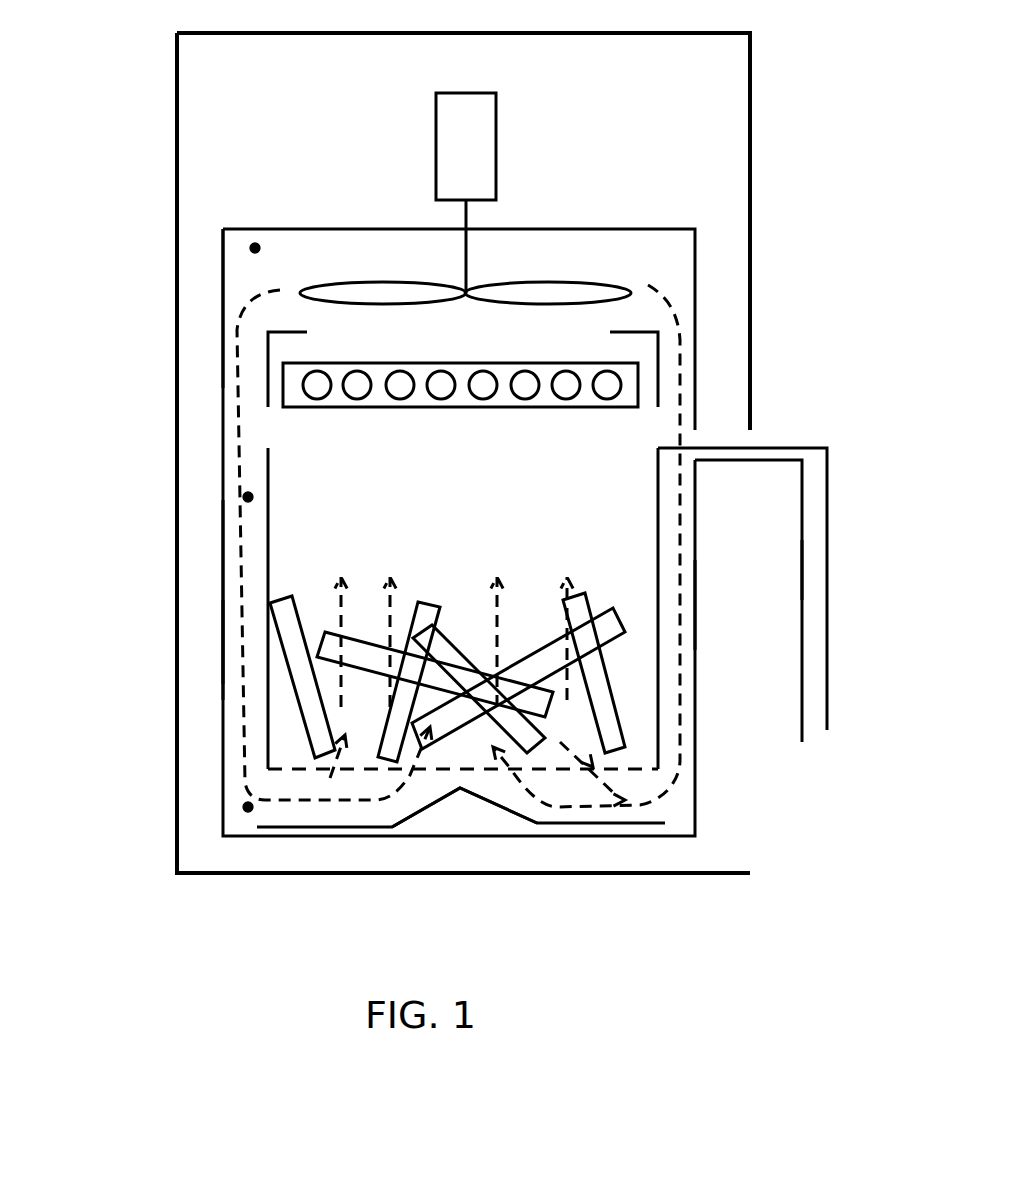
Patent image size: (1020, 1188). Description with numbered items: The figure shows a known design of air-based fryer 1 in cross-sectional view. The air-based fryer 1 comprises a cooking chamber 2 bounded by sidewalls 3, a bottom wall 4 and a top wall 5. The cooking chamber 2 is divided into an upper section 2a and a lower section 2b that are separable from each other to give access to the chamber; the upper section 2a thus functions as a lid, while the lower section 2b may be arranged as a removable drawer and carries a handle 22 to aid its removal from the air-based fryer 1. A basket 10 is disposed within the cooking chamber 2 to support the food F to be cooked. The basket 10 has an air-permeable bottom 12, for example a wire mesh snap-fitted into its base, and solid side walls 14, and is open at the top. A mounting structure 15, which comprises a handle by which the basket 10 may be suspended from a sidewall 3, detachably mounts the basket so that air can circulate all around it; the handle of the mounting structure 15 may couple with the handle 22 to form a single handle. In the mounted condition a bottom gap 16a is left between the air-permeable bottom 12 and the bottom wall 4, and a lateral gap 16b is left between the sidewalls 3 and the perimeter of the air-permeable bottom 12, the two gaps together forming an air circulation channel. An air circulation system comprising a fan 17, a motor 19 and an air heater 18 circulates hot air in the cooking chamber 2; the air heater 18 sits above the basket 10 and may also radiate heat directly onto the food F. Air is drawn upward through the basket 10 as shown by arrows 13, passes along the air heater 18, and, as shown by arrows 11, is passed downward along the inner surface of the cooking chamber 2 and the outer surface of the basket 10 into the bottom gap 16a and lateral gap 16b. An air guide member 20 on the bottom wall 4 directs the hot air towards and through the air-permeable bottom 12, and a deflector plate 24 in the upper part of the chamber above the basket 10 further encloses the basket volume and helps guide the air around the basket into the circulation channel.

The air-based fryer 1 is at (131, 87).
The cooking chamber 2 is at (255, 248).
The upper section 2a is at (223, 388).
The lower section 2b is at (225, 684).
The sidewalls 3 is at (225, 596).
The bottom wall 4 is at (283, 838).
The top wall 5 is at (333, 228).
The basket 10 is at (301, 554).
The arrows 11 is at (233, 332).
The air-permeable bottom 12 is at (630, 770).
The arrows 13 is at (495, 622).
The side walls 14 is at (658, 505).
The mounting structure 15 is at (817, 447).
The bottom gap 16a is at (248, 807).
The lateral gap 16b is at (248, 497).
The fan 17 is at (630, 293).
The air heater 18 is at (638, 385).
The motor 19 is at (496, 140).
The air guide member 20 is at (410, 820).
The handle 22 is at (803, 560).
The deflector plate 24 is at (266, 380).
The food F is at (446, 574).